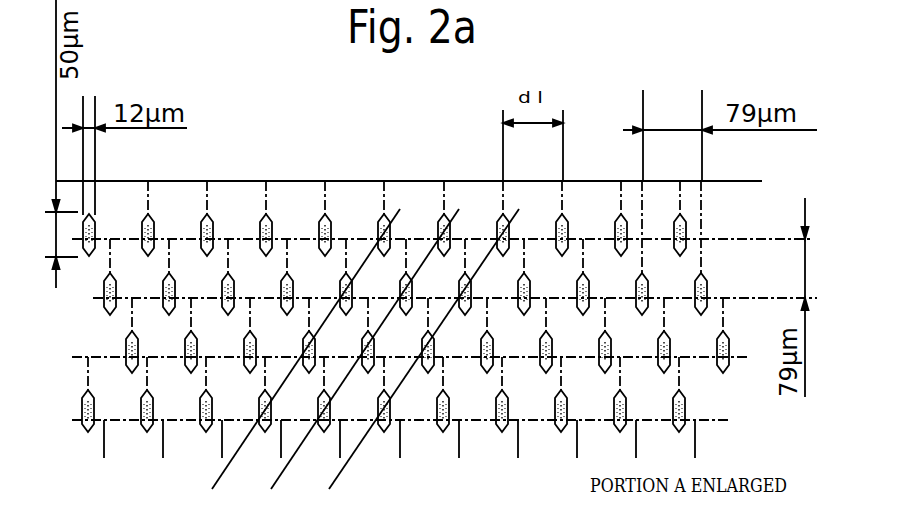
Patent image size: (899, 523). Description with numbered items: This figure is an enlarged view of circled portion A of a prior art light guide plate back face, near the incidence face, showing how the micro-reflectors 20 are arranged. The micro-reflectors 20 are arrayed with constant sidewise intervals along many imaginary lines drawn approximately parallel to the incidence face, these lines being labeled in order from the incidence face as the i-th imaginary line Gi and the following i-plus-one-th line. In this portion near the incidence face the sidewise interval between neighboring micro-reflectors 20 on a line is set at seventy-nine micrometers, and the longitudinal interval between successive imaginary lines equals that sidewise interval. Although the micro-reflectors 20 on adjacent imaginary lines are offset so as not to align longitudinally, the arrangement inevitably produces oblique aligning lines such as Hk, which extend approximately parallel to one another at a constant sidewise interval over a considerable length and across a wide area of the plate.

The micro-reflector 20 is at (706, 286).
The i-th imaginary line Gi is at (356, 234).
The oblique aligning line Hk is at (289, 363).